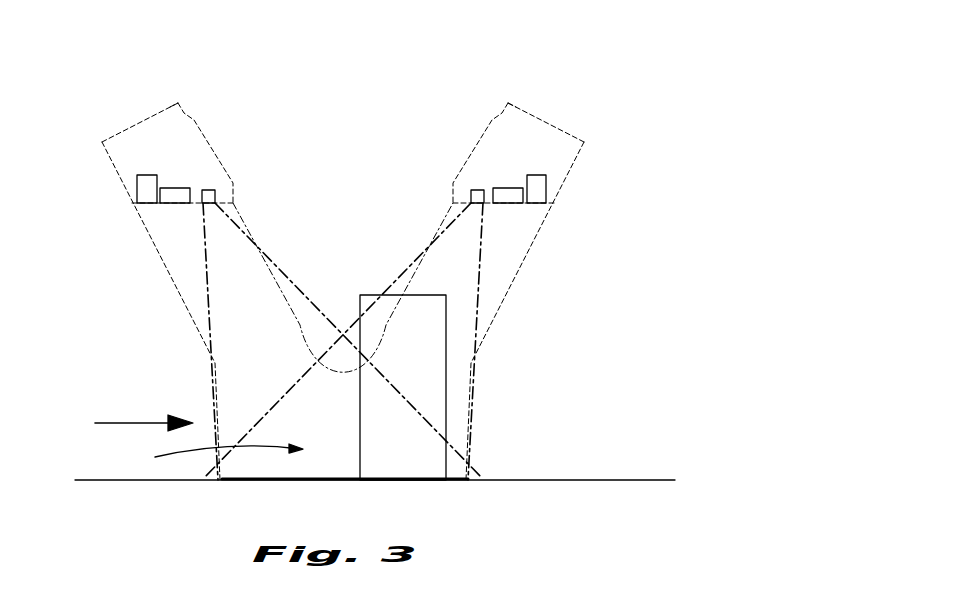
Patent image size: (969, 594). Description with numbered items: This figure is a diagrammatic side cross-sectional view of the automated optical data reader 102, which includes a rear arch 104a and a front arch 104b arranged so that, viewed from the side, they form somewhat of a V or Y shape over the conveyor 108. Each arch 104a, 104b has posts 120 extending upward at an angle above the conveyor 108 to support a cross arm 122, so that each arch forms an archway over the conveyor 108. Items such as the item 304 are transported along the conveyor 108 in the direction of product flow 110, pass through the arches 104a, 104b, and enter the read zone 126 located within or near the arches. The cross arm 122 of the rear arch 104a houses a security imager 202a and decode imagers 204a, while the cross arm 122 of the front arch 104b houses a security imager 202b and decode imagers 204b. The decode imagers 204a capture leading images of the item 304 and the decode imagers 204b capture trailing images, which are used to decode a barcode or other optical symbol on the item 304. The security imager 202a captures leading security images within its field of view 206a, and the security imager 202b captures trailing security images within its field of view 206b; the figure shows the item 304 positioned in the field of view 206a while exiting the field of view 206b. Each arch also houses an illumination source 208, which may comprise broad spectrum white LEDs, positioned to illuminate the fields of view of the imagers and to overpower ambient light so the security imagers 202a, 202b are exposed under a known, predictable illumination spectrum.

The automated optical data reader 102 is at (328, 140).
The rear arch 104a is at (553, 127).
The front arch 104b is at (132, 125).
The conveyor 108 is at (577, 478).
The direction of product flow 110 is at (120, 423).
The post 120 is at (160, 257).
The cross arm 122 is at (167, 103).
The read zone 126 is at (213, 456).
The security imager 202a is at (472, 190).
The security imager 202b is at (207, 190).
The decode imagers 204a is at (505, 188).
The decode imagers 204b is at (177, 188).
The field of view 206a is at (478, 315).
The field of view 206b is at (208, 317).
The illumination source 208 is at (148, 175).
The item 304 is at (430, 463).